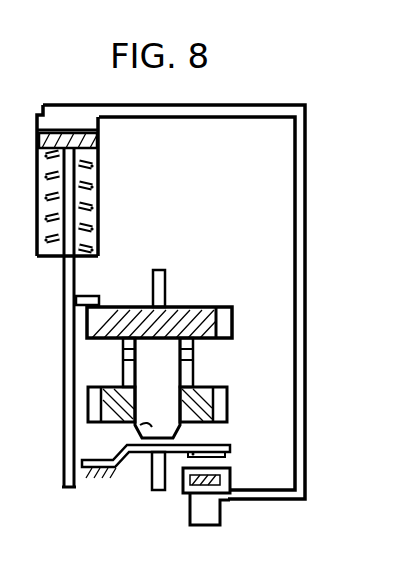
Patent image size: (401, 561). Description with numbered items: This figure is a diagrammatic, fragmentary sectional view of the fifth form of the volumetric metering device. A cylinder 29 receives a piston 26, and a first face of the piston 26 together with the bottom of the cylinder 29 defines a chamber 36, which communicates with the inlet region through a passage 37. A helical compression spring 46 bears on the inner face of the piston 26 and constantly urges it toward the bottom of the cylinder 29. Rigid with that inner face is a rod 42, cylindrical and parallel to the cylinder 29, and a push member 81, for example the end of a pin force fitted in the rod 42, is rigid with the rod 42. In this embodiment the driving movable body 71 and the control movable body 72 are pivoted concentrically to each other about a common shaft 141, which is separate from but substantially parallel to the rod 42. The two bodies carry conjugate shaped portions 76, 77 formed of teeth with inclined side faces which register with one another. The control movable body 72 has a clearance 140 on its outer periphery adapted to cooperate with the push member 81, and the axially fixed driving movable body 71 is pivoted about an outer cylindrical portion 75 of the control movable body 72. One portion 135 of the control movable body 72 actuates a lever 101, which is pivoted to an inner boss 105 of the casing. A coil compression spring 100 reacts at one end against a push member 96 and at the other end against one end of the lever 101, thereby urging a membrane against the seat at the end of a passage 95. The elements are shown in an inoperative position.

The chamber 36 is at (63, 118).
The piston 26 is at (100, 138).
The cylinder 29 is at (105, 172).
The helical compression spring 46 is at (97, 198).
The push member 81 is at (98, 298).
The common shaft 141 is at (163, 272).
The control movable body 72 is at (190, 307).
The clearance 140 is at (224, 316).
The shaped portion 77 is at (193, 352).
The shaped portion 76 is at (181, 381).
The driving movable body 71 is at (214, 396).
The rod 42 is at (66, 390).
The outer cylindrical portion 75 is at (150, 427).
The inner boss 105 is at (96, 478).
The portion of control movable body 135 is at (152, 445).
The lever 101 is at (231, 440).
The coil compression spring 100 is at (228, 462).
The push member 96 is at (222, 483).
The passage 95 is at (205, 516).
The passage 37 is at (303, 193).